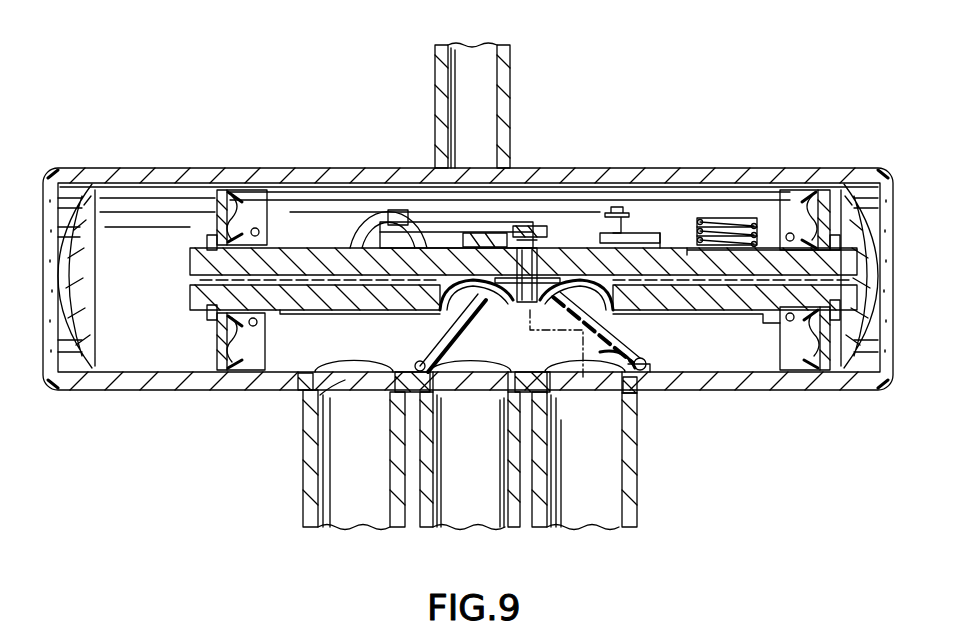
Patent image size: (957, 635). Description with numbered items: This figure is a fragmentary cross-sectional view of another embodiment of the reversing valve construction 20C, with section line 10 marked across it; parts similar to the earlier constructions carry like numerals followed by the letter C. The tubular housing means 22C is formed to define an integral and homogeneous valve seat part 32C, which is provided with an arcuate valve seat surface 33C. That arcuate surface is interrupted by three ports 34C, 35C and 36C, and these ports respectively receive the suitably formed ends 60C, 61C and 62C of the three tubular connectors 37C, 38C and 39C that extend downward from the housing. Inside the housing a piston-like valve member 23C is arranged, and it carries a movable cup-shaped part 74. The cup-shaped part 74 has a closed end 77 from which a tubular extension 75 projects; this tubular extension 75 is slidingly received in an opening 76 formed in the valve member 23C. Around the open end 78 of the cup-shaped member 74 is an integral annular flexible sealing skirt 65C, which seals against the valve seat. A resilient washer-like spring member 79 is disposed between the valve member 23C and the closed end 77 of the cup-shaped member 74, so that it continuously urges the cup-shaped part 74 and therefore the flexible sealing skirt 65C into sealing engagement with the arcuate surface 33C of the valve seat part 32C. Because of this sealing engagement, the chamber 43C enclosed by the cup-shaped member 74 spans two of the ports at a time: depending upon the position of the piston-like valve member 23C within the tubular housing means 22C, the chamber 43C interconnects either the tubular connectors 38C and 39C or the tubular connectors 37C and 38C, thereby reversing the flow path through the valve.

The section line 10 is at (530, 78).
The reversing valve construction 20C is at (748, 119).
The tubular housing means 22C is at (165, 168).
The valve member 23C is at (307, 248).
The tubular extension 75 is at (552, 258).
The opening 76 is at (528, 246).
The chamber 43C is at (490, 300).
The resilient washer-like spring member 79 is at (560, 288).
The cup-shaped part 74 is at (623, 330).
The closed end 77 is at (510, 310).
The end of tubular connector 61C is at (536, 334).
The end of tubular connector 62C is at (634, 360).
The annular flexible sealing skirt 65C is at (655, 354).
The end of tubular connector 60C is at (393, 372).
The open end 78 is at (440, 378).
The arcuate valve seat surface 33C is at (307, 374).
The valve seat part 32C is at (640, 386).
The port 34C is at (320, 396).
The port 35C is at (442, 386).
The port 36C is at (546, 386).
The tubular connector 37C is at (303, 494).
The tubular connector 38C is at (423, 518).
The tubular connector 39C is at (637, 498).